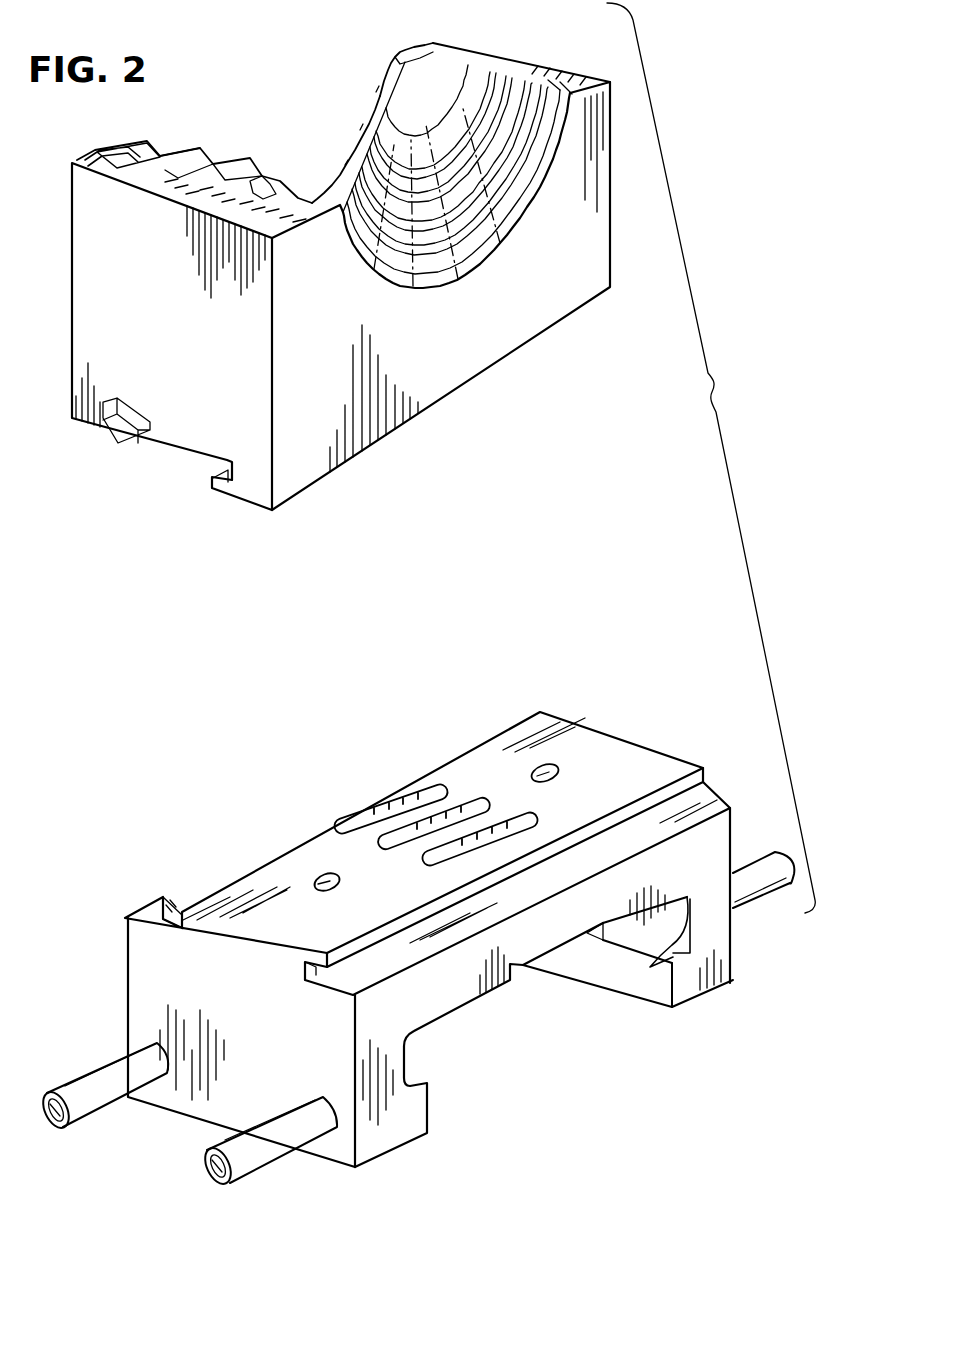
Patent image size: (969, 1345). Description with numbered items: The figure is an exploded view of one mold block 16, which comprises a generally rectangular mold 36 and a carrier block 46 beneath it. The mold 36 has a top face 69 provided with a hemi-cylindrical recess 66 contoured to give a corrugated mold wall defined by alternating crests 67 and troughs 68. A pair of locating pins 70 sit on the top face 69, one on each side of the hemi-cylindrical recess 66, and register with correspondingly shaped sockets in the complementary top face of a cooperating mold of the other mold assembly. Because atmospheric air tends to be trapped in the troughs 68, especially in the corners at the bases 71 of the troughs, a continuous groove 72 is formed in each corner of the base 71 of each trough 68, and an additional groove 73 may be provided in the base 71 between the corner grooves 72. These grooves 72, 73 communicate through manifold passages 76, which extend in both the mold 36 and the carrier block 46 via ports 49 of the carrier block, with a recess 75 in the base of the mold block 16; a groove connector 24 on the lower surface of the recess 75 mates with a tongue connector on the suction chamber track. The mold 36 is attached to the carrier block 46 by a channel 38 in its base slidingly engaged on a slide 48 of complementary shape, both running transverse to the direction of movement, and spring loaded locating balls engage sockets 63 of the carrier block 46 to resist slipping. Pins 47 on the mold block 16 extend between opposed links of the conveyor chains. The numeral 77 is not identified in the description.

The mold block 16 is at (711, 458).
The groove connector 24 is at (547, 960).
The mold 36 is at (108, 453).
The channel 38 is at (200, 447).
The carrier block 46 is at (400, 1156).
The pins 47 is at (263, 1153).
The slide 48 is at (177, 895).
The ports 49 is at (358, 808).
The sockets 63 is at (321, 887).
The hemi-cylindrical recess 66 is at (290, 140).
The crests 67 is at (383, 137).
The troughs 68 is at (207, 175).
The top face 69 is at (420, 52).
The locating pins 70 is at (258, 195).
The bases of the troughs 71 is at (512, 125).
The continuous groove 72 is at (422, 125).
The additional groove 73 is at (533, 167).
The recess 75 is at (122, 150).
The manifold passages 76 is at (660, 950).
The top surface 77 is at (178, 205).